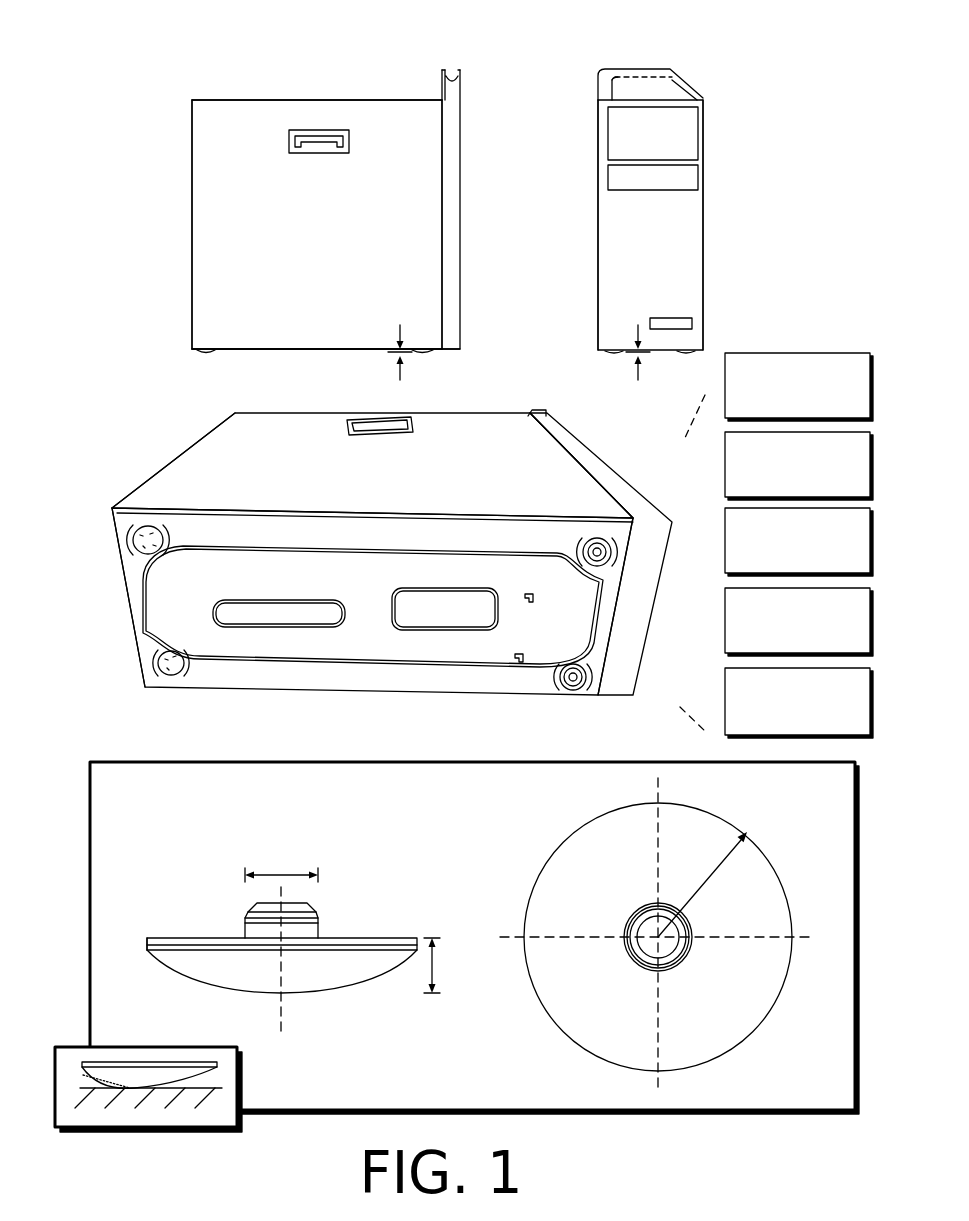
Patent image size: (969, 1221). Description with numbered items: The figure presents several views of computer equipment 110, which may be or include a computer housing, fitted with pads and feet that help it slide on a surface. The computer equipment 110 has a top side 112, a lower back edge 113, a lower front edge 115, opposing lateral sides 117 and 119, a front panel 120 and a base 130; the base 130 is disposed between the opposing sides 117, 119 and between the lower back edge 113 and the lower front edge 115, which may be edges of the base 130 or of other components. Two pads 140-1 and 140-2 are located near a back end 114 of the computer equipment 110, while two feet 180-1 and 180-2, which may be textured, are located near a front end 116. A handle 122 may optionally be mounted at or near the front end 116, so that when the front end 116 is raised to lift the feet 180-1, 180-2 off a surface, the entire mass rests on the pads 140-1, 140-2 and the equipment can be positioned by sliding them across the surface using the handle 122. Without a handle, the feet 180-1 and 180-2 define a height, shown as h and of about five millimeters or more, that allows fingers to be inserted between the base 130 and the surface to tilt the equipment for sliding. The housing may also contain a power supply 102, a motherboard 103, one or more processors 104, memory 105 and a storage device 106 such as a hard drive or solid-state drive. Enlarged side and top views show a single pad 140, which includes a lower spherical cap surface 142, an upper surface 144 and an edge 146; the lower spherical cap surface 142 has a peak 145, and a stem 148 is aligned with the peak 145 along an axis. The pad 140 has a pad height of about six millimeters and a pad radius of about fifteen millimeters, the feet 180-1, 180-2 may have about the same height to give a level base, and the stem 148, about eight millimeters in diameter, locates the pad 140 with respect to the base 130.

The computer equipment 110 is at (228, 72).
The top side 112 is at (372, 100).
The lower back edge 113 is at (192, 349).
The back end 114 is at (192, 228).
The lower front edge 115 is at (445, 350).
The front end 116 is at (442, 216).
The lateral side 117 is at (331, 234).
The lateral side 119 is at (582, 141).
The front panel 120 is at (455, 193).
The handle 122 is at (445, 78).
The base 130 is at (285, 350).
The pad 140 is at (148, 800).
The pad 140-1 is at (148, 526).
The pad 140-2 is at (171, 675).
The foot 180-1 is at (597, 548).
The foot 180-2 is at (573, 681).
The power supply 102 is at (780, 409).
The motherboard 103 is at (780, 488).
The processor 104 is at (780, 564).
The memory 105 is at (780, 644).
The storage device 106 is at (849, 725).
The lower spherical cap surface 142 is at (332, 990).
The upper surface 144 is at (195, 938).
The peak 145 is at (280, 995).
The edge 146 is at (147, 952).
The stem 148 is at (318, 912).